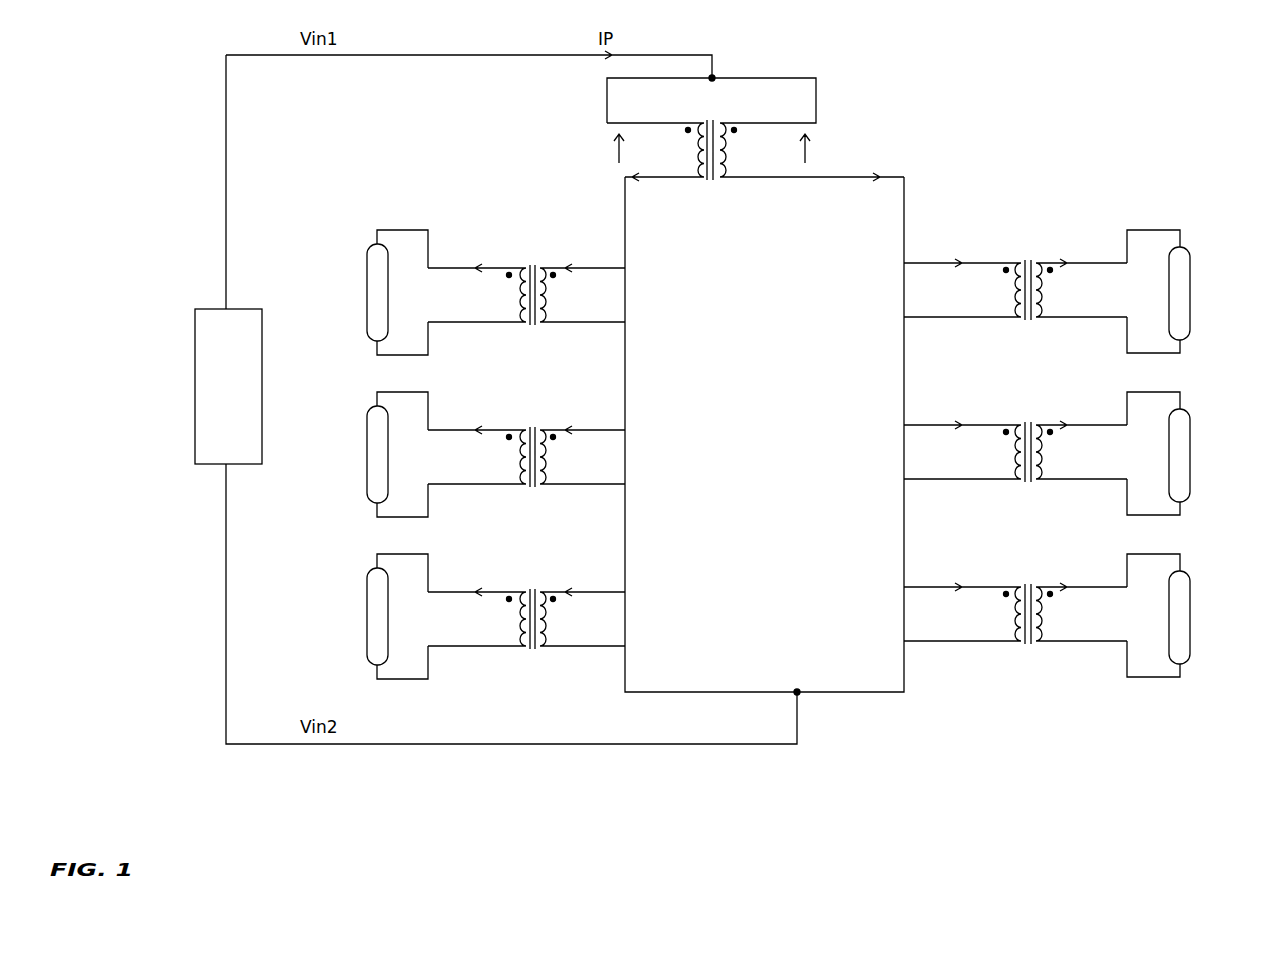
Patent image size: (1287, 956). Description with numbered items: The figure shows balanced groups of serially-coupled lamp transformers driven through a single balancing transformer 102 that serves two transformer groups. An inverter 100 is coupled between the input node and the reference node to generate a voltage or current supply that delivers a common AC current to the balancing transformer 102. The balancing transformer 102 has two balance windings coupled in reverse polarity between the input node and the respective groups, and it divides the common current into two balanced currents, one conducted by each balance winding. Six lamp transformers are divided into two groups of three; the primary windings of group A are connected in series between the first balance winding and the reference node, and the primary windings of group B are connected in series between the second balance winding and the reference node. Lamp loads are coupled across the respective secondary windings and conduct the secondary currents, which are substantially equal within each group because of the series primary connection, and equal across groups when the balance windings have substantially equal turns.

The inverter 100 is at (243, 309).
The balancing transformer 102 is at (706, 205).